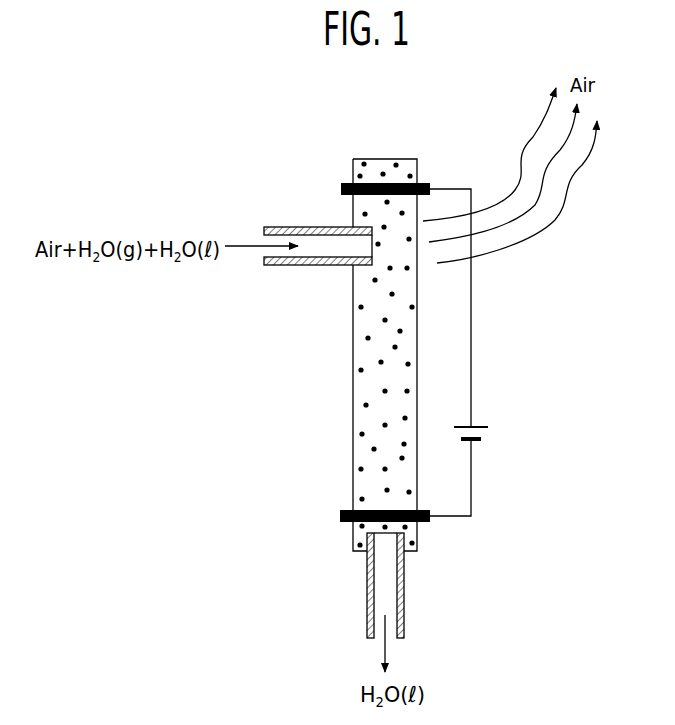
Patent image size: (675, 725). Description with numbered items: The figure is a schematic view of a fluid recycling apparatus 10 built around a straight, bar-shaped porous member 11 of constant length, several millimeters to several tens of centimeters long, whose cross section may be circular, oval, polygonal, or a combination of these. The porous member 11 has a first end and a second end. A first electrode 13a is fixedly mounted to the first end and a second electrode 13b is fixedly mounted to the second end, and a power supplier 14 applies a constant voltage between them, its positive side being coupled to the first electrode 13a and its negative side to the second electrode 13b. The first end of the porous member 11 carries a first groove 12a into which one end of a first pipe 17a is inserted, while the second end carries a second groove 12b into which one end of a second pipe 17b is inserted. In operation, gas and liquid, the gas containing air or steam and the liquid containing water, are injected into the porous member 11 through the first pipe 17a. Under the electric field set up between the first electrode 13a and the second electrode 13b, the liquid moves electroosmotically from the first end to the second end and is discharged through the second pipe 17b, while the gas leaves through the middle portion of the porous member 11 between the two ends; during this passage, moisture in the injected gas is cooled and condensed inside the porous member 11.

The fluid recycling apparatus 10 is at (302, 182).
The porous member 11 is at (353, 411).
The first groove 12a is at (361, 265).
The second groove 12b is at (367, 536).
The first electrode 13a is at (427, 181).
The second electrode 13b is at (340, 516).
The power supplier 14 is at (490, 432).
The first pipe 17a is at (292, 267).
The second pipe 17b is at (405, 585).